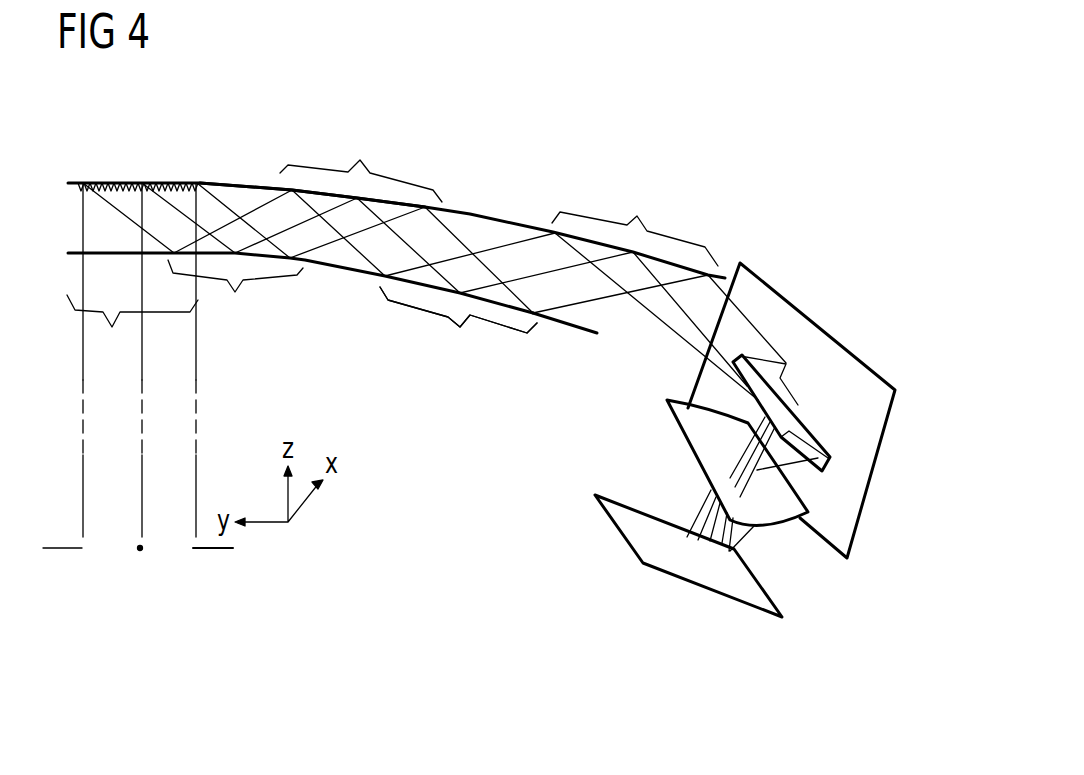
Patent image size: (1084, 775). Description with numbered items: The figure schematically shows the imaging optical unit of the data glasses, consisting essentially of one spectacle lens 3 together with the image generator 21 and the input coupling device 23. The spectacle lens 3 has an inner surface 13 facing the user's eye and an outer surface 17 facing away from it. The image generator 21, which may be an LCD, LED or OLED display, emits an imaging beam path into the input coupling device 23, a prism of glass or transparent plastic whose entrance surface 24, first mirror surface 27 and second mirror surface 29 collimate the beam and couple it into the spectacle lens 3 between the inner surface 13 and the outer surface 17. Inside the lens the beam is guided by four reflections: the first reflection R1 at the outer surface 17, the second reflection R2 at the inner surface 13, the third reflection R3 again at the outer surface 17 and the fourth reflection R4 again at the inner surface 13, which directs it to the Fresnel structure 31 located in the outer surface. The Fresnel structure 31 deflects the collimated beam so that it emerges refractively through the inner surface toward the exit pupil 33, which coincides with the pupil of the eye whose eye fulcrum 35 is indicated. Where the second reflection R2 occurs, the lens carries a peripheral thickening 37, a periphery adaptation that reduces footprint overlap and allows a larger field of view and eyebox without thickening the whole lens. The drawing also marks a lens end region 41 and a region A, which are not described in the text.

The spectacle lens 3 is at (363, 219).
The inner surface 13 is at (327, 271).
The outer surface 17 is at (237, 182).
The image generator 21 is at (830, 467).
The input coupling device 23 is at (893, 455).
The entrance surface 24 is at (755, 526).
The first mirror surface 27 is at (713, 597).
The second mirror surface 29 is at (848, 347).
The Fresnel structure 31 is at (162, 181).
The exit pupil 33 is at (208, 550).
The eye fulcrum 35 is at (140, 551).
The peripheral thickening 37 is at (402, 327).
The end face 41 is at (571, 322).
The incoupling region A is at (120, 365).
The first reflection R1 is at (635, 221).
The second reflection R2 is at (458, 327).
The third reflection R3 is at (361, 162).
The fourth reflection R4 is at (235, 295).